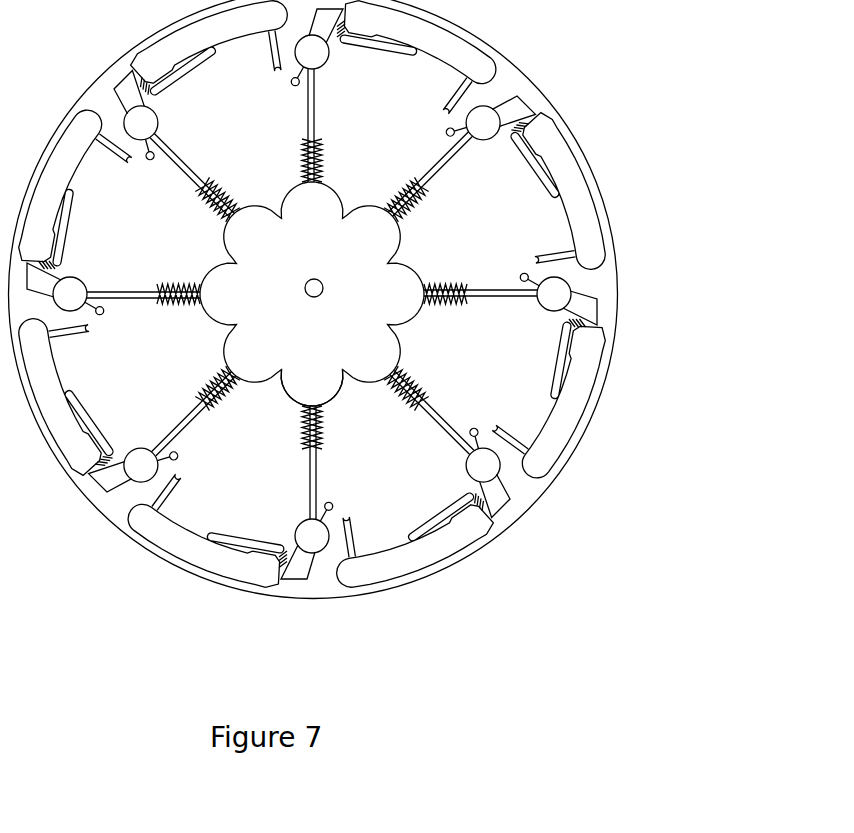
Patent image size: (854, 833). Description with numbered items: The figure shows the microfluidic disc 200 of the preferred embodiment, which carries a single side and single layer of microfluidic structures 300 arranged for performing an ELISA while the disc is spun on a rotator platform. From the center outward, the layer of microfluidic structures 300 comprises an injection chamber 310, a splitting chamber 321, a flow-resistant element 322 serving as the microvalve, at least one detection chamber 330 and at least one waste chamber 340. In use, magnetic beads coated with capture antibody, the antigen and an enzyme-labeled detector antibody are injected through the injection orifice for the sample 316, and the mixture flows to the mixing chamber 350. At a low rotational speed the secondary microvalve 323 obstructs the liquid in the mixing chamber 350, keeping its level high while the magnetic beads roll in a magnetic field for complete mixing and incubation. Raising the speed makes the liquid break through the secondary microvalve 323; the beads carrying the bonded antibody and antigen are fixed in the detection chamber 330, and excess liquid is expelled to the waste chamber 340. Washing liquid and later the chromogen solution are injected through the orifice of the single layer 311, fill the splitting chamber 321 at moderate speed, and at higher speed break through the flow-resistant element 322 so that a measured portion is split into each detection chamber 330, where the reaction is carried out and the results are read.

The microfluidic disc 200 is at (548, 70).
The layer of microfluidic structures 300 is at (369, 323).
The injection chamber 310 is at (308, 246).
The orifice of the single layer 311 is at (323, 288).
The splitting chamber 321 is at (368, 354).
The flow-resistant element 322 is at (418, 389).
The injection orifice for the sample 316 is at (472, 433).
The mixing chamber 350 is at (485, 463).
The detection chamber 330 is at (500, 482).
The secondary microvalve 323 is at (477, 497).
The waste chamber 340 is at (370, 568).